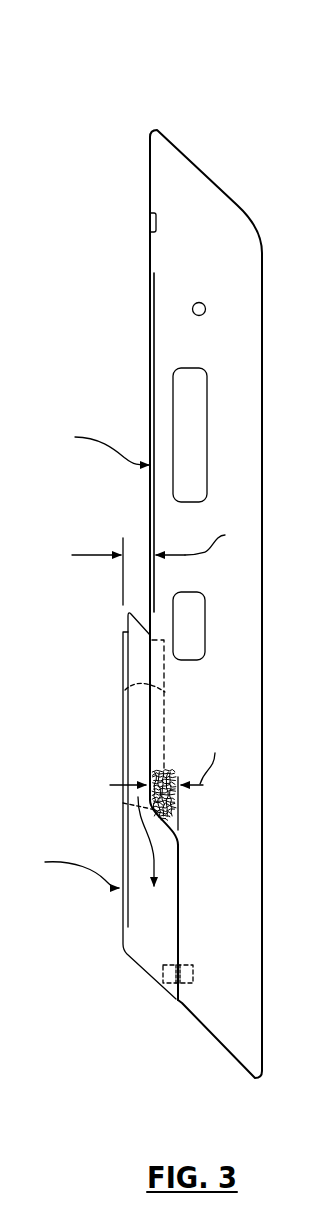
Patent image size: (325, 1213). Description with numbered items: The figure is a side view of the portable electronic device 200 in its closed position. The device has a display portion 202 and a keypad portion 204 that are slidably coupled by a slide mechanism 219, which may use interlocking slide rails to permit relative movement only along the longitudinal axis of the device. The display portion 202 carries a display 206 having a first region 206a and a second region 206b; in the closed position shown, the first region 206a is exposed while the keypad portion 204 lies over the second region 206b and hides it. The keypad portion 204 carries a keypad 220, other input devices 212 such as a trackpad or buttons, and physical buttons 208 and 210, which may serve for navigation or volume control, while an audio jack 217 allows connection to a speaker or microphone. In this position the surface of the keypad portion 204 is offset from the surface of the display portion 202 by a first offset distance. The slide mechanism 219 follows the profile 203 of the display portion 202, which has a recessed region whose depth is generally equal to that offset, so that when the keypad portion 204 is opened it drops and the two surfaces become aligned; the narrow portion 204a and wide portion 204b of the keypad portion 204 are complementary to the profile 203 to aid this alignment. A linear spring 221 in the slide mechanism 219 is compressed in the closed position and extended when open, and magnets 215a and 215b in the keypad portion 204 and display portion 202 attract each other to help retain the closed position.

The portable electronic device 200 is at (177, 84).
The display portion 202 is at (170, 162).
The profile 203 is at (177, 827).
The keypad portion 204 is at (140, 920).
The narrow portion 204a is at (140, 708).
The wide portion 204b is at (158, 930).
The display 206 is at (153, 367).
The first region 206a is at (149, 497).
The second region 206b is at (146, 728).
The physical button 208 is at (192, 410).
The physical button 210 is at (178, 602).
The input devices 212 is at (122, 645).
The magnet 215a is at (160, 976).
The magnet 215b is at (188, 982).
The audio jack 217 is at (192, 309).
The slide mechanism 219 is at (125, 690).
The keypad 220 is at (123, 765).
The linear spring 221 is at (123, 803).